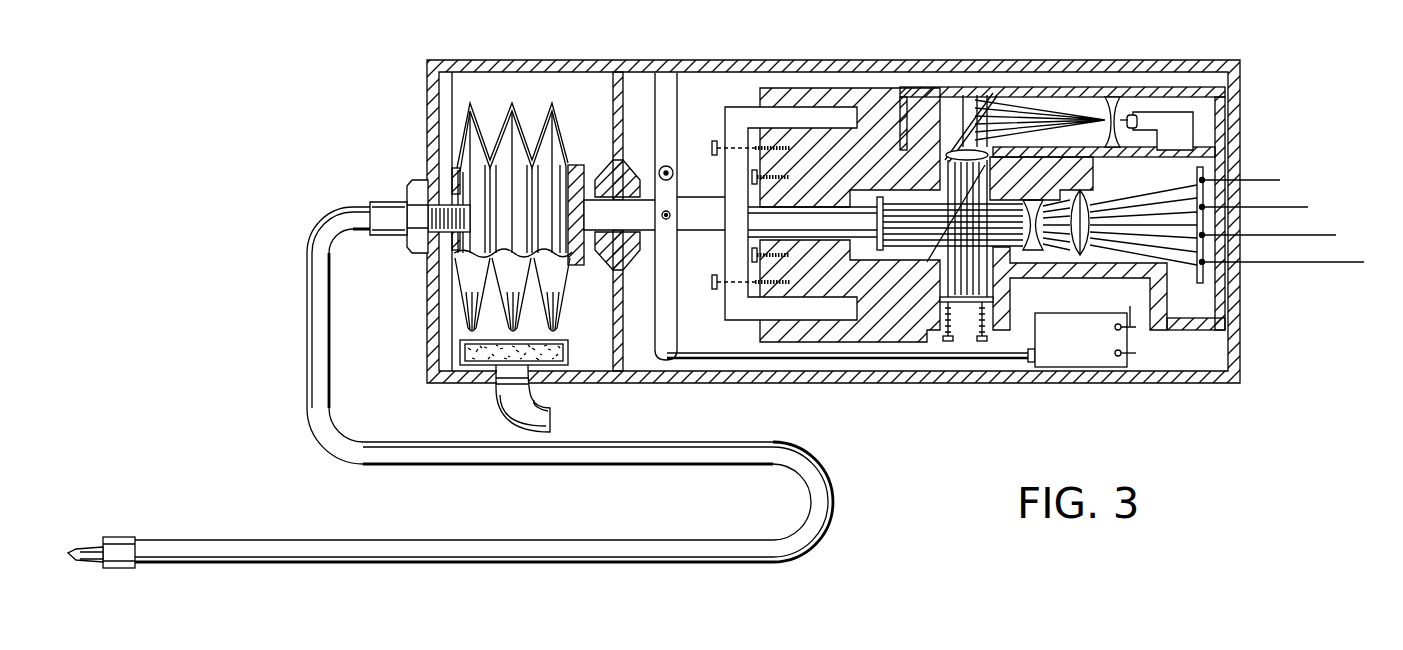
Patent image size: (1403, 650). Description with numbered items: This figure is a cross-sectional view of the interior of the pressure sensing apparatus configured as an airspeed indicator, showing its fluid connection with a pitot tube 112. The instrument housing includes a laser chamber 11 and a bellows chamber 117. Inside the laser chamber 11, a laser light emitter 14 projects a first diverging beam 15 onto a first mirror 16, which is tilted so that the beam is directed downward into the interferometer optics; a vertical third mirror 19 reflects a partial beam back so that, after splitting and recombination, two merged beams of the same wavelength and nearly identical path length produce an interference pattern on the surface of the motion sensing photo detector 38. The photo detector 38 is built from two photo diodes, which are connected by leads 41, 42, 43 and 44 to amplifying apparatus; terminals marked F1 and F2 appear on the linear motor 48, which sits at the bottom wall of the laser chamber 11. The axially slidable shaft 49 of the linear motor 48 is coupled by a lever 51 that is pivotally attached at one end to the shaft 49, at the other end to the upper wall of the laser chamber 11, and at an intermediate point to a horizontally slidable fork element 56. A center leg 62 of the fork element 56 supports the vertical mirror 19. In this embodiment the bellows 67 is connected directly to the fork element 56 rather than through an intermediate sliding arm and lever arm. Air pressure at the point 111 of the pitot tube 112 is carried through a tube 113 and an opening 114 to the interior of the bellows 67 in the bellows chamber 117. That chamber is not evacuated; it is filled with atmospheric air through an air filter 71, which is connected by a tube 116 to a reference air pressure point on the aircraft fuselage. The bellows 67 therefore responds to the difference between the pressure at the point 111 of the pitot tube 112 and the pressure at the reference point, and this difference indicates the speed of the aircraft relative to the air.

The laser chamber 11 is at (712, 339).
The laser light emitter 14 is at (1186, 128).
The first diverging beam 15 is at (1057, 112).
The first mirror 16 is at (953, 124).
The third mirror 19 is at (937, 220).
The motion sensing photo detector 38 is at (1198, 283).
The lead 41 is at (1257, 181).
The lead 42 is at (1271, 208).
The lead 43 is at (1285, 236).
The lead 44 is at (1299, 263).
The linear motor 48 is at (1080, 342).
The axially slidable shaft 49 is at (890, 360).
The lever 51 is at (668, 273).
The fork element 56 is at (740, 108).
The center leg 62 is at (814, 236).
The bellows 67 is at (514, 118).
The air filter 71 is at (568, 351).
The point of the pitot tube 111 is at (72, 552).
The pitot tube 112 is at (113, 569).
The tube 113 is at (389, 563).
The opening 114 is at (470, 222).
The tube 116 is at (550, 422).
The bellows chamber 117 is at (606, 139).
The switch terminal F1 is at (1124, 306).
The switch terminal F2 is at (1134, 353).